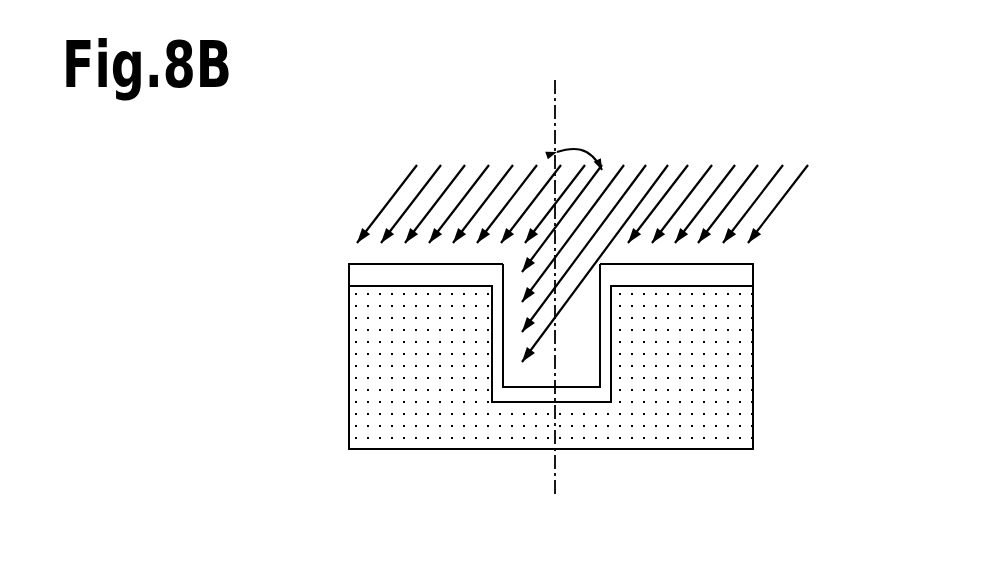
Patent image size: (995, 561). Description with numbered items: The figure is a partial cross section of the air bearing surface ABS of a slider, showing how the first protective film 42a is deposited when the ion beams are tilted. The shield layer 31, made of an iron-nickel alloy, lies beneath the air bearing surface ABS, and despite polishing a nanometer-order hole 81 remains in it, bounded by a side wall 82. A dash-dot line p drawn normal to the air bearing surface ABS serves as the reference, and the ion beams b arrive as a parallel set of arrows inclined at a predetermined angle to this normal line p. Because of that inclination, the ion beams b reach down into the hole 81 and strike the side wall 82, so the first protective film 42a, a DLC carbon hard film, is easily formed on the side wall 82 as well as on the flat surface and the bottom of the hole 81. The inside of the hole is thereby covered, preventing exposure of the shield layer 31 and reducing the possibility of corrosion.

The shield layer 31 is at (754, 350).
The first protective film 42a is at (754, 268).
The hole 81 is at (578, 362).
The side wall 82 is at (492, 333).
The ion beam b is at (768, 215).
The normal line p is at (556, 108).
The air bearing surface ABS is at (375, 285).